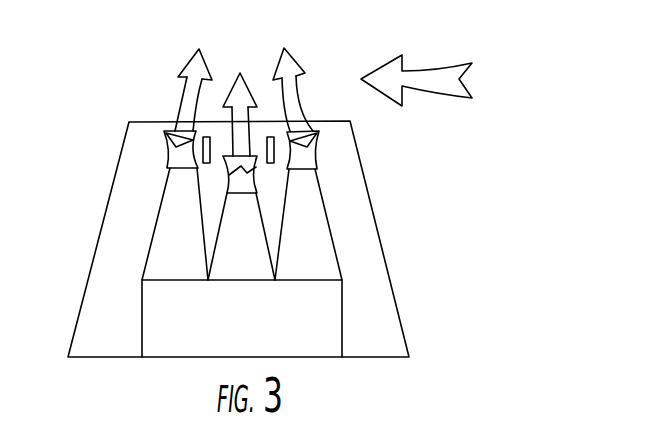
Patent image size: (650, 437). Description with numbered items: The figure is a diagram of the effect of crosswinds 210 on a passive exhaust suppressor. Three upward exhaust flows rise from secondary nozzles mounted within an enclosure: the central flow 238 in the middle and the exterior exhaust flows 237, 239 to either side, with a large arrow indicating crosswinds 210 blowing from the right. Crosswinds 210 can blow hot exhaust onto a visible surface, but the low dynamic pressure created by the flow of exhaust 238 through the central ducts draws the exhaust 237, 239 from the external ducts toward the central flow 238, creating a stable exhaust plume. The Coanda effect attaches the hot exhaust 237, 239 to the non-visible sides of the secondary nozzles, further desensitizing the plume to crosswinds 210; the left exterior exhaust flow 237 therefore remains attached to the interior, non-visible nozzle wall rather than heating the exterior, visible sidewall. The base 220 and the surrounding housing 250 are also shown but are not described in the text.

The crosswinds 210 is at (451, 71).
The base substrate 220 is at (342, 307).
The left exterior exhaust flow 237 is at (292, 100).
The central flow 238 is at (237, 83).
The exhaust from external duct 239 is at (188, 90).
The housing 250 is at (385, 255).